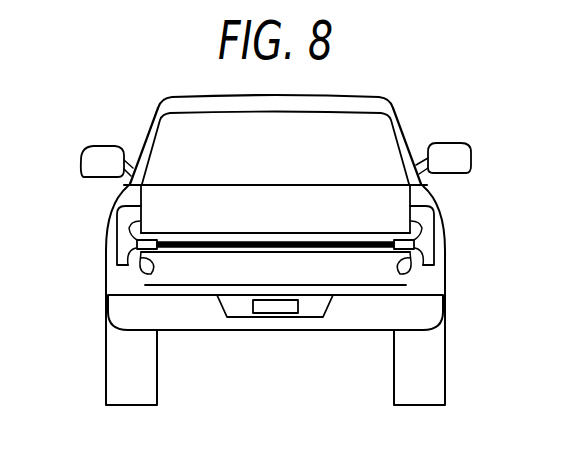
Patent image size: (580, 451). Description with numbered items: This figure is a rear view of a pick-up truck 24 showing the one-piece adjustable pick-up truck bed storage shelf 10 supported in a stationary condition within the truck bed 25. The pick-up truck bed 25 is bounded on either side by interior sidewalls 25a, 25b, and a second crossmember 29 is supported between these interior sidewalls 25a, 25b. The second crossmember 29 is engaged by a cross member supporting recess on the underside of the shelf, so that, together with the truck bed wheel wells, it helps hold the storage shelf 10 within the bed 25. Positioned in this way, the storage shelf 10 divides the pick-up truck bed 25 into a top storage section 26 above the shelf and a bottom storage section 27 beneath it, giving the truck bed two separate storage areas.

The pick-up truck 24 is at (436, 83).
The pick-up truck bed 25 is at (152, 199).
The interior sidewall 25a is at (146, 275).
The interior sidewall 25b is at (410, 270).
The top storage section 26 is at (268, 222).
The bottom storage section 27 is at (233, 278).
The second crossmember 29 is at (345, 243).
The one-piece adjustable pick-up truck bed storage shelf 10 is at (368, 240).